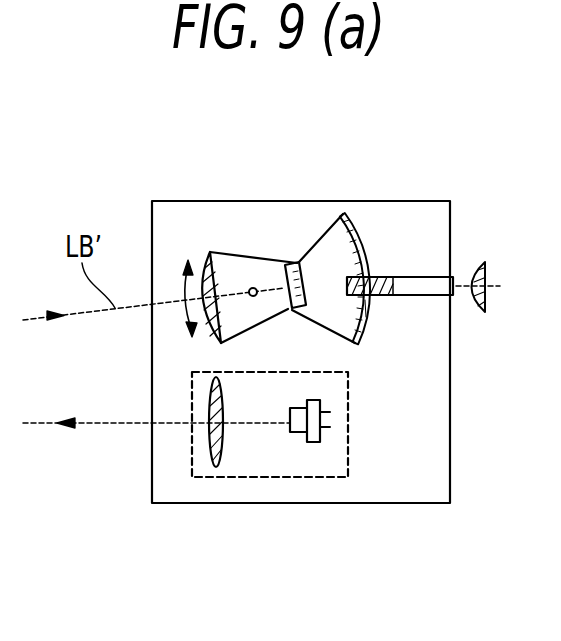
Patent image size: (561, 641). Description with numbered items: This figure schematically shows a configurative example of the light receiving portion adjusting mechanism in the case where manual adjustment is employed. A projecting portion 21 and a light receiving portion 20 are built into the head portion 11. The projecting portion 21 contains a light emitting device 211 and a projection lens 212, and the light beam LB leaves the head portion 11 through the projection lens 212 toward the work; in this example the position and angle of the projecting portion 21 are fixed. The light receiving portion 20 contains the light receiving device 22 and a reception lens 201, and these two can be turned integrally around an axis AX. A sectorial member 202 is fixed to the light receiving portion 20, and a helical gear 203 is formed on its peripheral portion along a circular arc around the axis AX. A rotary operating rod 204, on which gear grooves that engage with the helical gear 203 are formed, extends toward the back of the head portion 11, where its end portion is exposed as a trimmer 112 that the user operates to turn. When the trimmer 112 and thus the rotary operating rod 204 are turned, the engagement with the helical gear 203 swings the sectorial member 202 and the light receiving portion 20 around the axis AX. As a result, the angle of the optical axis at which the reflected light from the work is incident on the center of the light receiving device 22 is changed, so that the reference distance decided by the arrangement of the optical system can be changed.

The head portion 11 is at (400, 201).
The light receiving portion 20 is at (255, 242).
The reception lens 201 is at (205, 252).
The light receiving device 22 is at (296, 262).
The sectorial member 202 is at (360, 338).
The helical gear 203 is at (368, 317).
The rotary operating rod 204 is at (413, 272).
The trimmer 112 is at (453, 270).
The projecting portion 21 is at (275, 478).
The light emitting device 211 is at (313, 442).
The projection lens 212 is at (217, 467).
The axis AX is at (254, 296).
The light beam LB is at (120, 422).